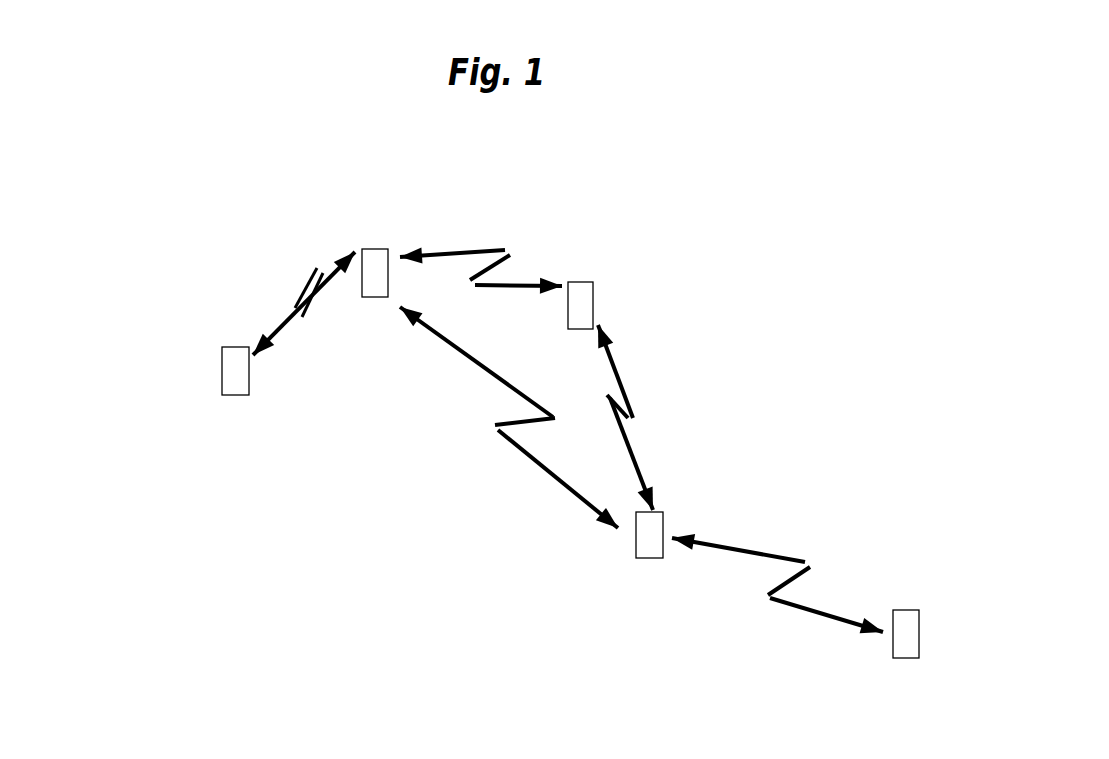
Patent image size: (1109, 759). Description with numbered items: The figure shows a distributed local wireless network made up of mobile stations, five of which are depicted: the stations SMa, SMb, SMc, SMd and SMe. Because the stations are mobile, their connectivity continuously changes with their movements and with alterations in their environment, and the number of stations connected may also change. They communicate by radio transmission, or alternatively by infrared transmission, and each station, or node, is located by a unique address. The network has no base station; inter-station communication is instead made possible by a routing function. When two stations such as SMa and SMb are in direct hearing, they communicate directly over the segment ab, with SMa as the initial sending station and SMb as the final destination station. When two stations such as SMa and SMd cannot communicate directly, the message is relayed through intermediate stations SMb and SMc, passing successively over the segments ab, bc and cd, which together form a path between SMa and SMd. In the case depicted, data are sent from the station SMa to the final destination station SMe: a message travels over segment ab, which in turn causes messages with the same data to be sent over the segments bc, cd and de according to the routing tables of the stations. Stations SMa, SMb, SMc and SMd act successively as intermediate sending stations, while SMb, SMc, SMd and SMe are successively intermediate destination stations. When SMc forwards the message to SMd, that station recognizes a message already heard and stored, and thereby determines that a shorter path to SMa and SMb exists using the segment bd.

The station SMa is at (222, 360).
The station SMb is at (377, 250).
The station SMc is at (593, 288).
The station SMd is at (653, 558).
The station SMe is at (910, 610).
The segment ab is at (287, 303).
The segment bc is at (480, 250).
The segment bd is at (513, 440).
The segment cd is at (627, 425).
The segment de is at (775, 552).